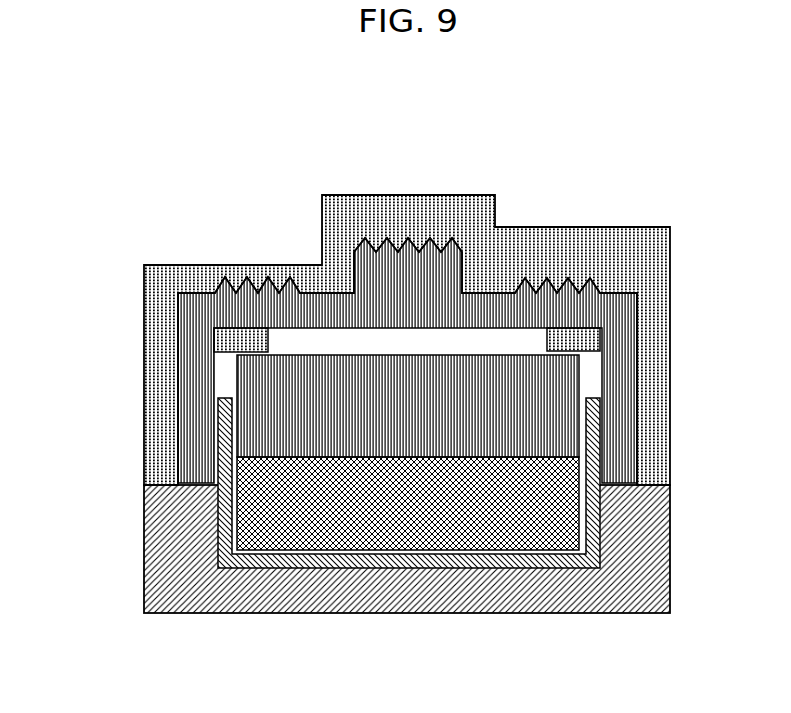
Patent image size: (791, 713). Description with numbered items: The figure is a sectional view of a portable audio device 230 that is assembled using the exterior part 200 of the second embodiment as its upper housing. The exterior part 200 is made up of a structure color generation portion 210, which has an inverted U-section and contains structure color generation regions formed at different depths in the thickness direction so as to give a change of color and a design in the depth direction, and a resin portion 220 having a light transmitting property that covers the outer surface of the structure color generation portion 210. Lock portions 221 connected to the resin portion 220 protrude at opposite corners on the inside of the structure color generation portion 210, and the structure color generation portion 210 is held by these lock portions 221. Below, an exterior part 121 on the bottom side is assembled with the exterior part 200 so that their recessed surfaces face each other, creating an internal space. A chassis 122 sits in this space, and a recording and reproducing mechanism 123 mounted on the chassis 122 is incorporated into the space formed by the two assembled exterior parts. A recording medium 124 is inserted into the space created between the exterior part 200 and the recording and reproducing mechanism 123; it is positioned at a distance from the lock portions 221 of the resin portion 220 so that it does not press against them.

The portable audio device 230 is at (385, 385).
The exterior part 200 is at (347, 322).
The structure color generation portion 210 is at (408, 290).
The resin portion 220 is at (603, 238).
The lock portion 221 is at (242, 334).
The exterior part on the bottom side 121 is at (260, 594).
The chassis 122 is at (597, 457).
The recording and reproducing mechanism 123 is at (540, 498).
The recording medium 124 is at (553, 380).